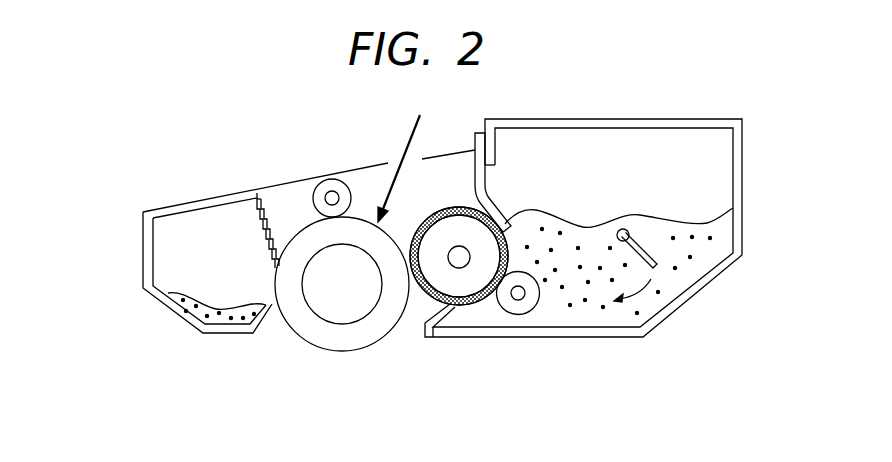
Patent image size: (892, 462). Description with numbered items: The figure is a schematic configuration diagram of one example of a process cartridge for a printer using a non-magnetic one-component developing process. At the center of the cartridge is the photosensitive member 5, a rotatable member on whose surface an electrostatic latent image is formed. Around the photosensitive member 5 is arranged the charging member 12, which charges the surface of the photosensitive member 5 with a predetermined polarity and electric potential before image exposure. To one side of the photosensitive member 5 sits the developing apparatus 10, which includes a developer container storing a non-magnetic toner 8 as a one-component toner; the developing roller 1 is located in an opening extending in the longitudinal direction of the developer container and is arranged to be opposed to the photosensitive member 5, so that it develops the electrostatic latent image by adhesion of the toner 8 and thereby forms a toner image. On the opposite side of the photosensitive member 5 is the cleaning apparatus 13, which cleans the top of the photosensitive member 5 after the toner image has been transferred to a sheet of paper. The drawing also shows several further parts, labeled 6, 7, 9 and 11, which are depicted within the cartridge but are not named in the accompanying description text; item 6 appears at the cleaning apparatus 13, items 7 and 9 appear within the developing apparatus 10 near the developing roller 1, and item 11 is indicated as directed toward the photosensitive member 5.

The developing roller 1 is at (453, 287).
The photosensitive member 5 is at (313, 350).
The cleaning blade 6 is at (265, 245).
The toner supply roller 7 is at (518, 315).
The non-magnetic toner 8 is at (598, 258).
The developing blade 9 is at (485, 188).
The developing apparatus 10 is at (698, 290).
The laser light 11 is at (408, 136).
The charging member 12 is at (326, 184).
The cleaning apparatus 13 is at (142, 240).